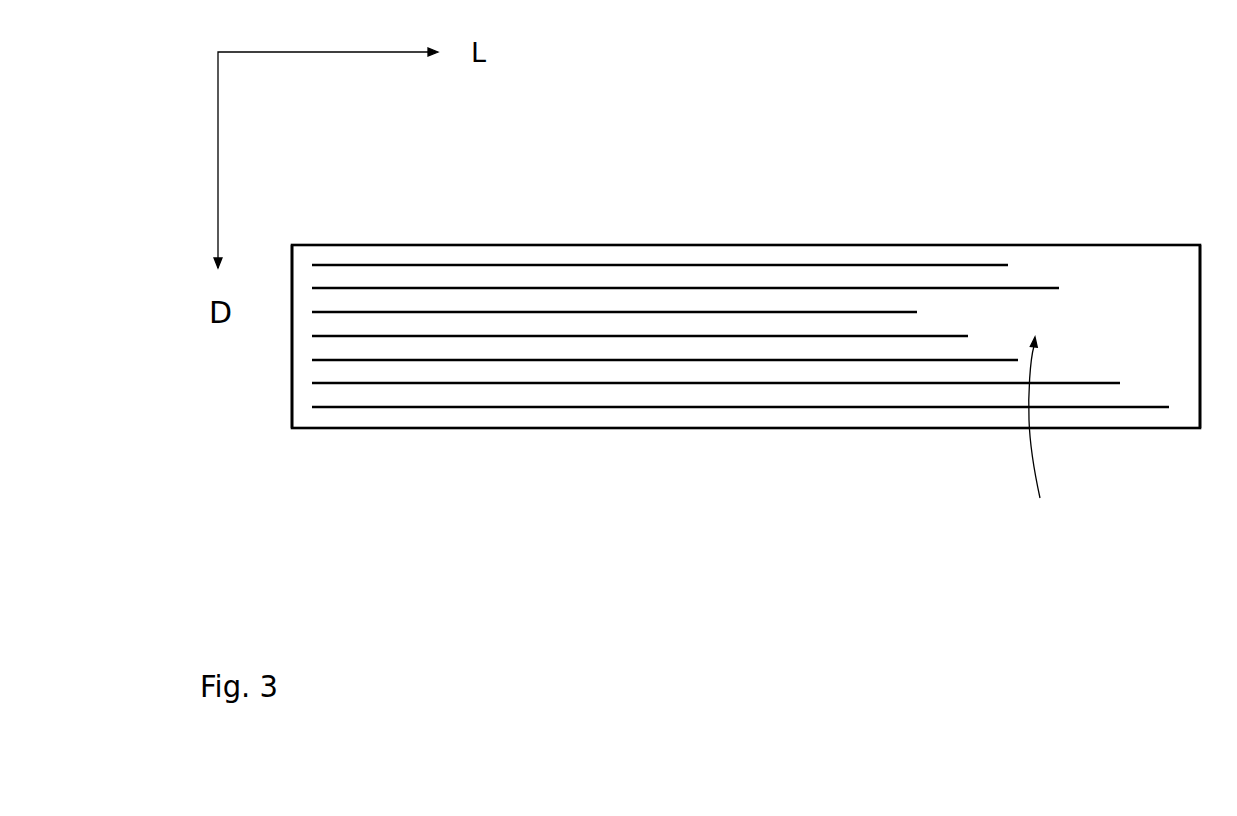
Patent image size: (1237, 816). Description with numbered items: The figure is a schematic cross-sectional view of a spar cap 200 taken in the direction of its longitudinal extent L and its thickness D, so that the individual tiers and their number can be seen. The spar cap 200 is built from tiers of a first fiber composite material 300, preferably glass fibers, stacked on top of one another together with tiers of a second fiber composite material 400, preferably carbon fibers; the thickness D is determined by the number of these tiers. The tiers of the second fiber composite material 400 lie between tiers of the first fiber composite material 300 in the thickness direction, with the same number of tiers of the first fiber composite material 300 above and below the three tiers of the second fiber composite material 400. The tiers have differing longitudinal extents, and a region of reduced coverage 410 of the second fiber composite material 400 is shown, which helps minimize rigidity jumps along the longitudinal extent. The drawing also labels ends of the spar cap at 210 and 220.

The spar cap 200 is at (1132, 162).
The first end of substrate 210 is at (292, 337).
The second end of substrate 220 is at (1199, 330).
The first fiber composite material 300 is at (672, 290).
The second fiber composite material 400 is at (793, 313).
The region of reduced coverage 410 is at (1038, 432).